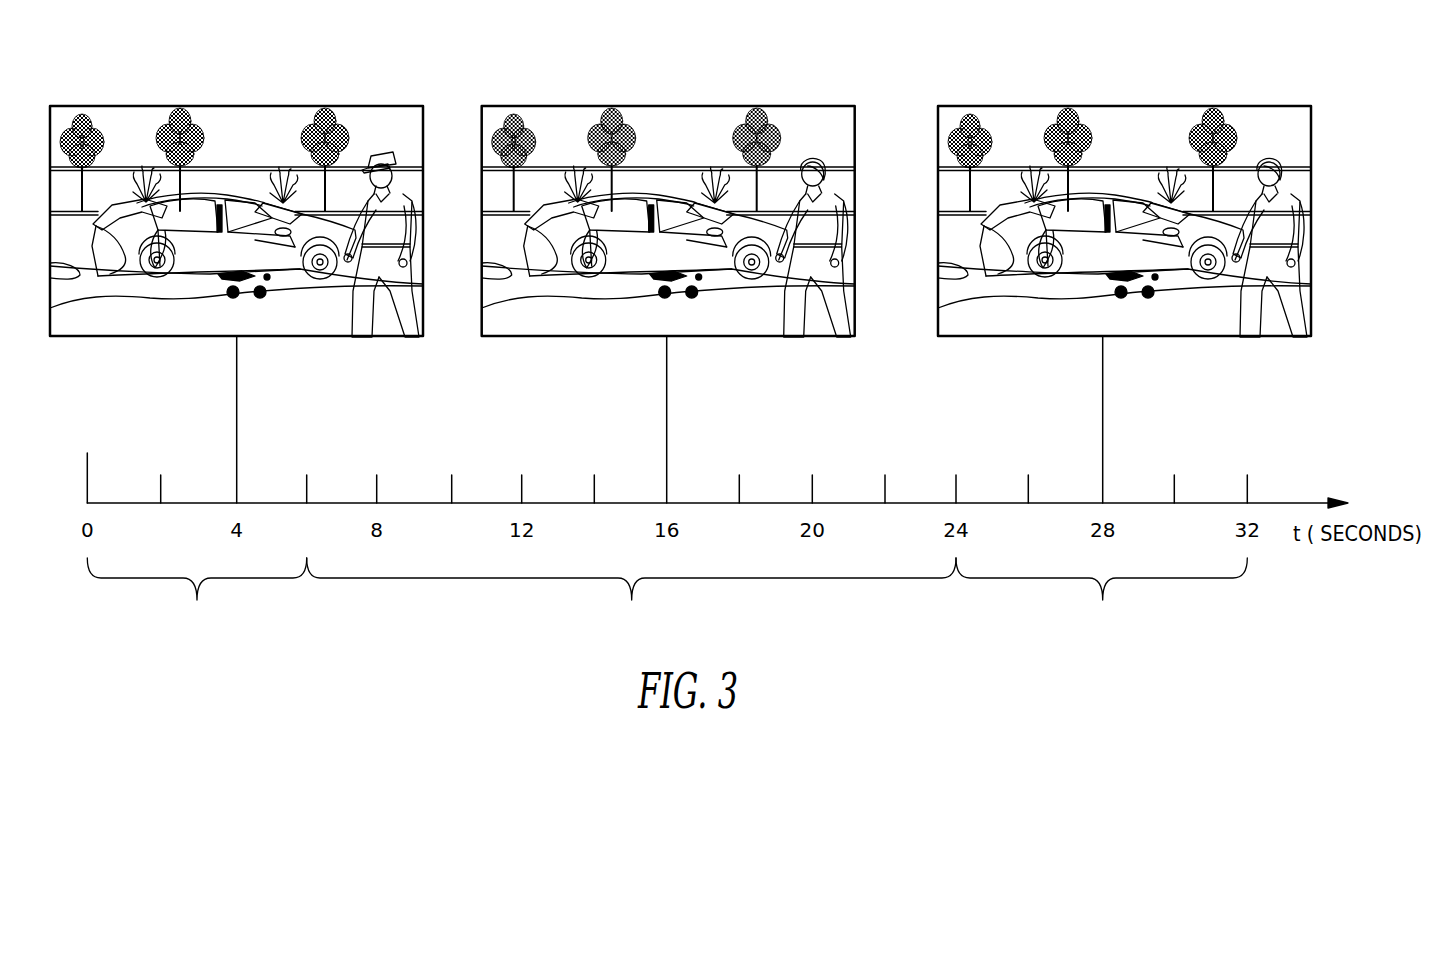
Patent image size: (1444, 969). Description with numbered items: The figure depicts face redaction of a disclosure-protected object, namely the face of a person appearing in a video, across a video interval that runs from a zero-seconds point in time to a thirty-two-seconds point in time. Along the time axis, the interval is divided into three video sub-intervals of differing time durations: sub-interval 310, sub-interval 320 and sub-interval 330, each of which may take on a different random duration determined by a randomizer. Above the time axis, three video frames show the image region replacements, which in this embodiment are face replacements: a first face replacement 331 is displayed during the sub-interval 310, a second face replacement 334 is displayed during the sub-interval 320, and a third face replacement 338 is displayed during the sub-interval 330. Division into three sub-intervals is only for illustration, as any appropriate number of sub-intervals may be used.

The sub-interval 310 is at (196, 592).
The sub-interval 320 is at (631, 592).
The sub-interval 330 is at (1101, 592).
The first face replacement 331 is at (378, 152).
The second face replacement 334 is at (810, 152).
The third face replacement 338 is at (1268, 152).